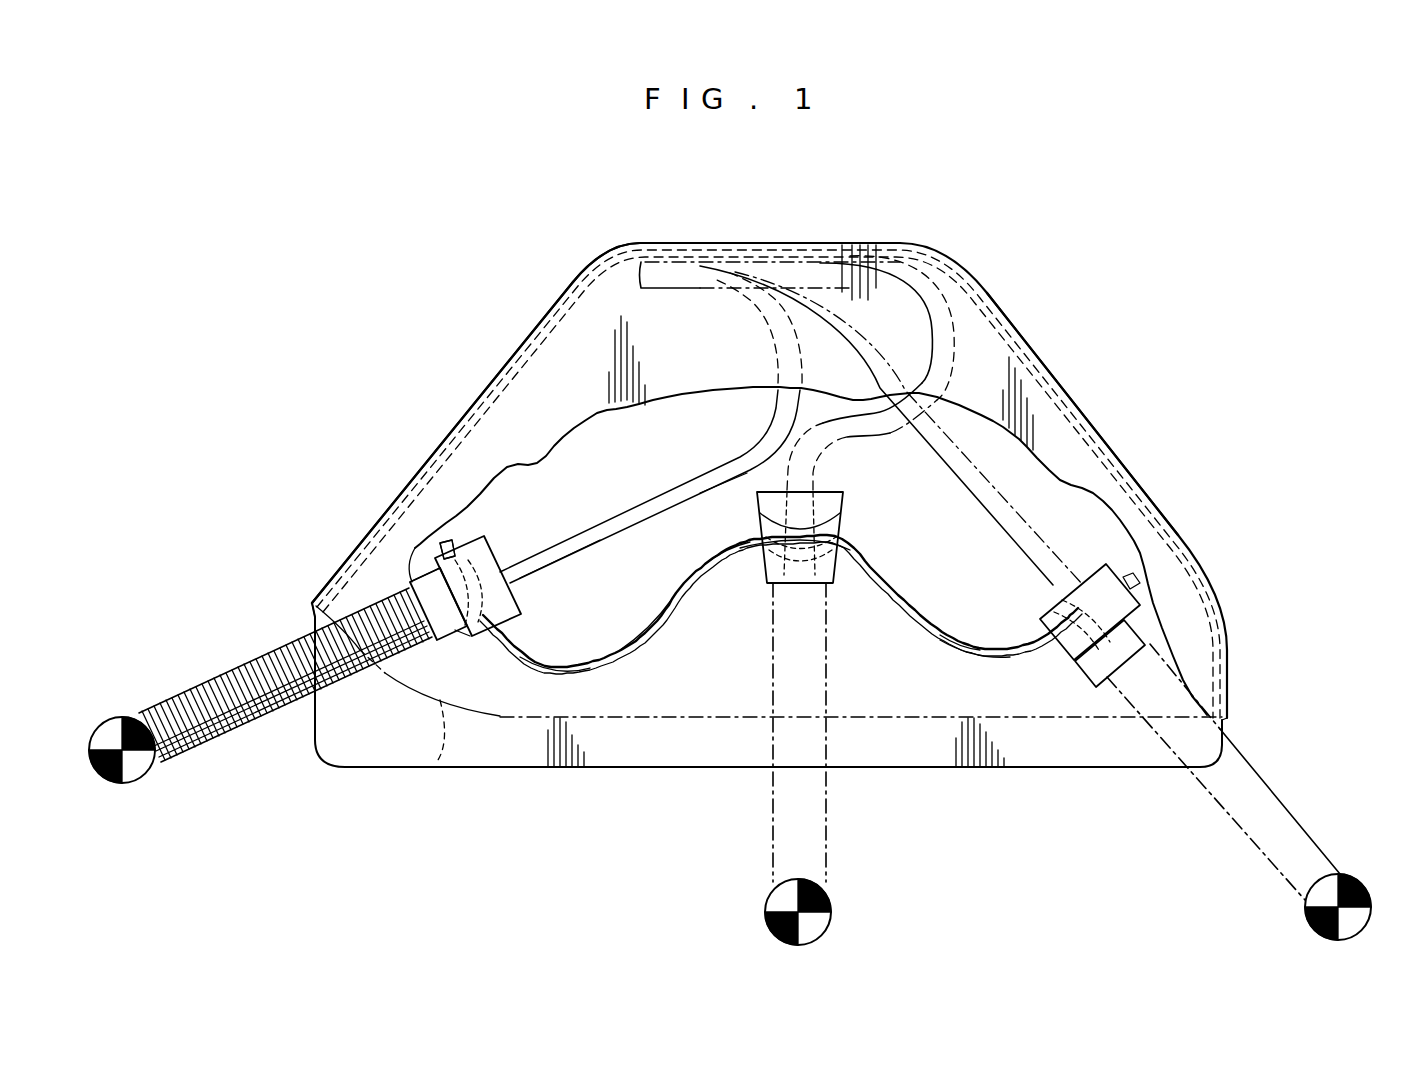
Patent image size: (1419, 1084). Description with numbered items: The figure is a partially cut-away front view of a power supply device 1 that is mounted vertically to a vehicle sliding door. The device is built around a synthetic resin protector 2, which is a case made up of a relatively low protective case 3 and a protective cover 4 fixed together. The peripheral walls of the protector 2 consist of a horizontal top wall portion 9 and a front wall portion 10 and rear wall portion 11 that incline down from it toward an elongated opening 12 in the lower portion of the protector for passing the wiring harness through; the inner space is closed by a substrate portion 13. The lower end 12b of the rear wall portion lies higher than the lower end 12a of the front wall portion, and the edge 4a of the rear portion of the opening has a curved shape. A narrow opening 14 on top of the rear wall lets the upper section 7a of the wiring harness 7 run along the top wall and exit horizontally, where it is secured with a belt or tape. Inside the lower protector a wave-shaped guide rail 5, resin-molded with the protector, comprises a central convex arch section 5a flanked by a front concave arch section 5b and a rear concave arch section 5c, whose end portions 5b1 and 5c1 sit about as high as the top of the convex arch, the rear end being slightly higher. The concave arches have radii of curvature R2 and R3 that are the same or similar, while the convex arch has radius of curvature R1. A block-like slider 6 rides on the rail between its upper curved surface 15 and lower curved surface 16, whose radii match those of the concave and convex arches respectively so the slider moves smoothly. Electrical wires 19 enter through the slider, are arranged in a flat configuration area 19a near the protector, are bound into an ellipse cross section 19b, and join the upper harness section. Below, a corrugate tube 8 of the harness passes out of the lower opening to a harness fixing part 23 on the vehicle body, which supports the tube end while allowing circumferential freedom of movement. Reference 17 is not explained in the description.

The power supply device 1 is at (546, 198).
The protector 2 is at (620, 838).
The protective case 3 is at (622, 772).
The protective cover 4 is at (685, 720).
The edge of the rear portion of the opening 4a is at (440, 700).
The wave-shaped guide rail 5 is at (659, 649).
The convex arch section 5a is at (745, 548).
The front concave arch section 5b is at (996, 660).
The end portion of the front concave arch section 5b1 is at (1135, 575).
The rear concave arch section 5c is at (560, 663).
The end portion of the rear concave arch section 5c1 is at (447, 542).
The slider 6 is at (523, 599).
The wiring harness 7 is at (273, 721).
The upper section of the wiring harness 7a is at (677, 292).
The corrugate tube 8 is at (405, 658).
The top wall portion 9 is at (783, 240).
The front wall portion 10 is at (1083, 401).
The rear wall portion 11 is at (465, 410).
The opening 12 is at (932, 760).
The lower end of the front wall portion 12a is at (1232, 722).
The lower end of the rear wall portion 12b is at (305, 600).
The substrate portion 13 is at (522, 362).
The opening 14 is at (575, 282).
The upper curved surface 15 is at (480, 563).
The lower curved surface 16 is at (458, 620).
The clamp nut edge 17 is at (412, 578).
The electrical wires 19 is at (590, 537).
The flat configuration area 19a is at (545, 555).
The ellipse cross section 19b is at (680, 490).
The harness fixing part 23 is at (150, 772).
The radius of curvature of the convex arch section R1 is at (729, 573).
The radius of curvature of the front concave arch section R2 is at (973, 627).
The radius of curvature of the rear concave arch section R3 is at (640, 631).